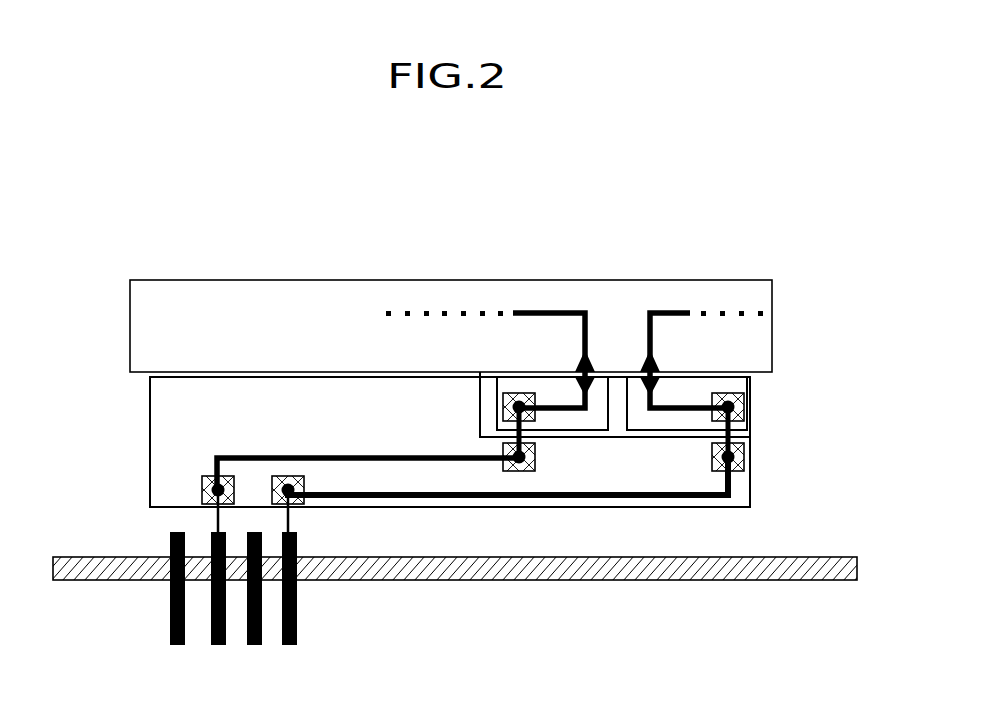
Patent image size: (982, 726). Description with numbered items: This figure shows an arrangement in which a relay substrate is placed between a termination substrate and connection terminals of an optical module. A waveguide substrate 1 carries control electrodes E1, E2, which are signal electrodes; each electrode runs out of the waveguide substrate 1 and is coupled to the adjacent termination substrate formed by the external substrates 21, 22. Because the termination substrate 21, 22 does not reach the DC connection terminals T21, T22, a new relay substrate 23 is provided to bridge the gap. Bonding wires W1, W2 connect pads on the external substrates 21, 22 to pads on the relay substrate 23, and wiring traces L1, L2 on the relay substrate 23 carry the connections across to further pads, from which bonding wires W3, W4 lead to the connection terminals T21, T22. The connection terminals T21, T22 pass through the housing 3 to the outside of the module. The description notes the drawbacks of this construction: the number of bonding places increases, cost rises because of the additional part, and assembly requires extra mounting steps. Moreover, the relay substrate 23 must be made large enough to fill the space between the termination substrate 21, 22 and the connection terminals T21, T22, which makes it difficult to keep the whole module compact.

The waveguide substrate 1 is at (285, 328).
The relay substrate 23 is at (173, 419).
The external substrate (termination substrate) 21 is at (567, 422).
The external substrate (termination substrate) 22 is at (658, 422).
The control electrode E1 is at (540, 312).
The control electrode E2 is at (677, 313).
The bonding wire W1 is at (502, 425).
The bonding wire W2 is at (742, 422).
The first wiring line L1 is at (368, 461).
The second wiring line L2 is at (508, 476).
The bonding wire W3 is at (218, 513).
The bonding wire W4 is at (290, 513).
The housing 3 is at (477, 568).
The connection terminal T21 is at (212, 633).
The connection terminal T22 is at (297, 630).